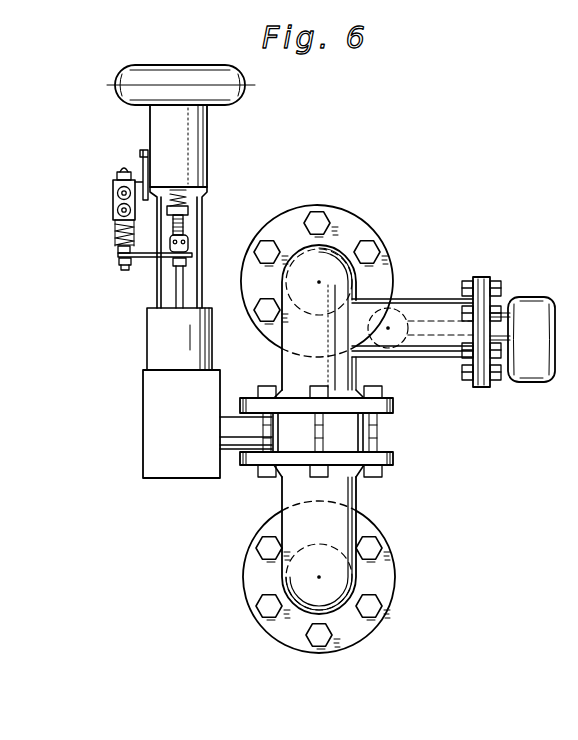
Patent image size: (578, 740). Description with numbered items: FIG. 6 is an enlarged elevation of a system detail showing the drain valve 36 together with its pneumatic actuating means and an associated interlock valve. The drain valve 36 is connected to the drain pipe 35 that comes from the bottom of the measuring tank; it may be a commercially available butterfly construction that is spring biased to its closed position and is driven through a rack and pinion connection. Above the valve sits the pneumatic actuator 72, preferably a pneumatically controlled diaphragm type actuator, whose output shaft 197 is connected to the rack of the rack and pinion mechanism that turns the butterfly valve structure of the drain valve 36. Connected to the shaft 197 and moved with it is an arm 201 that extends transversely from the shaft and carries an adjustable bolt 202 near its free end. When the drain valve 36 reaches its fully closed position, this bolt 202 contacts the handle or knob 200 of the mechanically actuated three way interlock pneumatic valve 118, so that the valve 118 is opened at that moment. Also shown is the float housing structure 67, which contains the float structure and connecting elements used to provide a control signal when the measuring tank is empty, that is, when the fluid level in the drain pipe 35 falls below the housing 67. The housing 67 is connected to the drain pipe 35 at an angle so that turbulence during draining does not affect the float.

The pneumatic actuator 72 is at (216, 112).
The interlock pneumatic valve 118 is at (110, 198).
The handle or knob 200 is at (121, 243).
The arm 201 is at (148, 259).
The adjustable bolt 202 is at (118, 267).
The output shaft 197 is at (181, 230).
The drain pipe 35 is at (327, 256).
The float housing structure 67 is at (424, 304).
The drain valve 36 is at (394, 430).